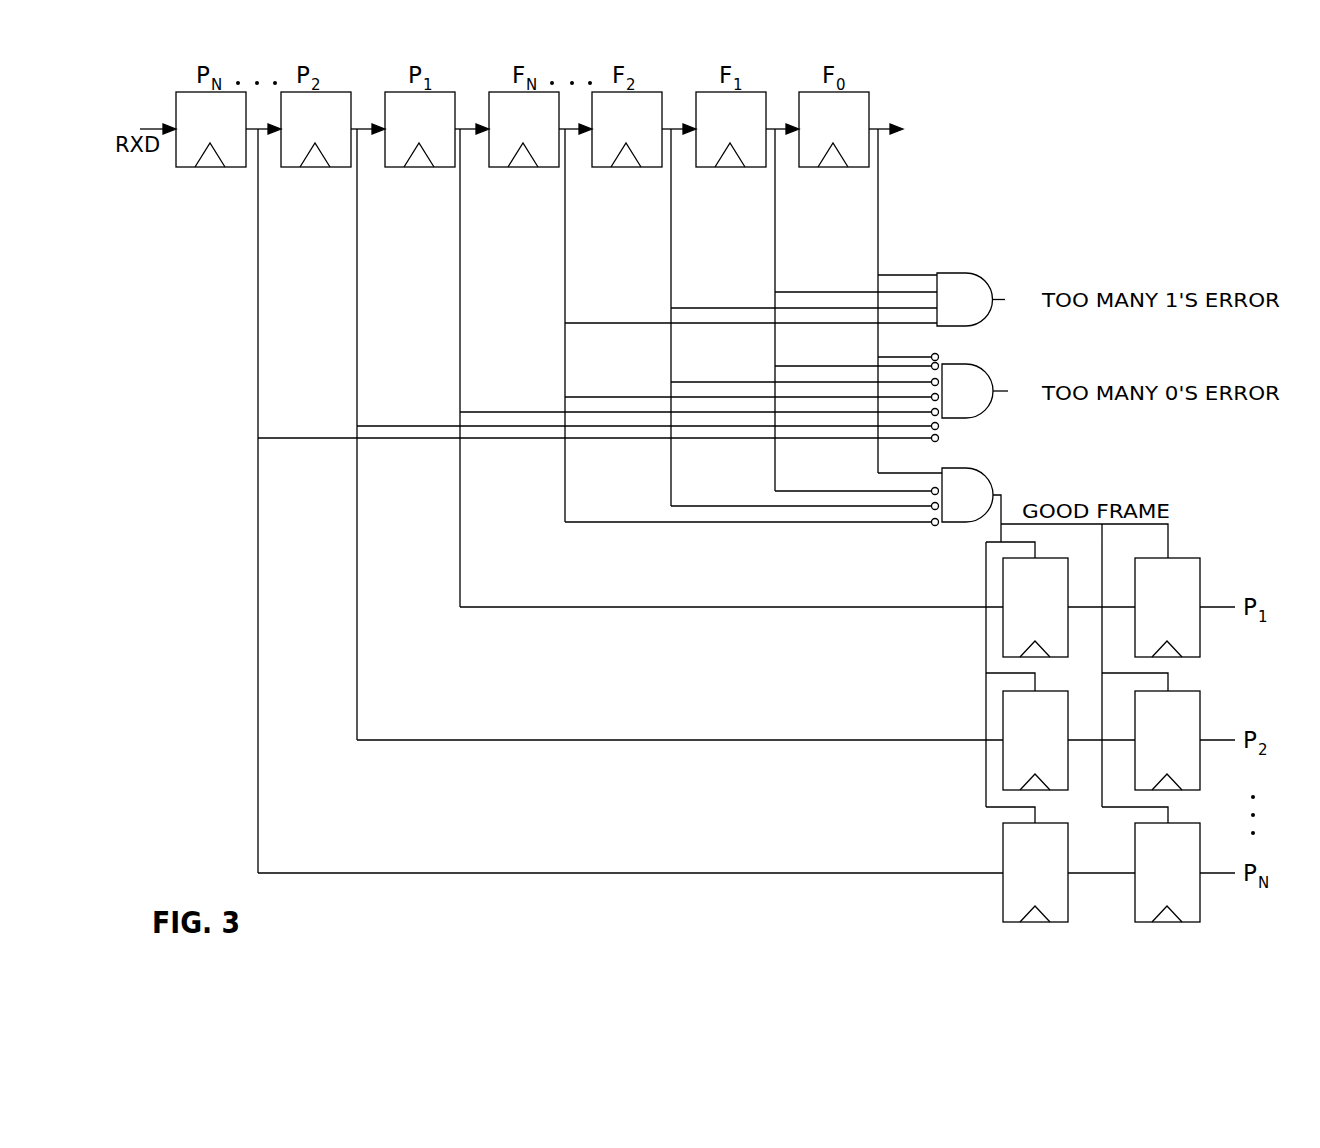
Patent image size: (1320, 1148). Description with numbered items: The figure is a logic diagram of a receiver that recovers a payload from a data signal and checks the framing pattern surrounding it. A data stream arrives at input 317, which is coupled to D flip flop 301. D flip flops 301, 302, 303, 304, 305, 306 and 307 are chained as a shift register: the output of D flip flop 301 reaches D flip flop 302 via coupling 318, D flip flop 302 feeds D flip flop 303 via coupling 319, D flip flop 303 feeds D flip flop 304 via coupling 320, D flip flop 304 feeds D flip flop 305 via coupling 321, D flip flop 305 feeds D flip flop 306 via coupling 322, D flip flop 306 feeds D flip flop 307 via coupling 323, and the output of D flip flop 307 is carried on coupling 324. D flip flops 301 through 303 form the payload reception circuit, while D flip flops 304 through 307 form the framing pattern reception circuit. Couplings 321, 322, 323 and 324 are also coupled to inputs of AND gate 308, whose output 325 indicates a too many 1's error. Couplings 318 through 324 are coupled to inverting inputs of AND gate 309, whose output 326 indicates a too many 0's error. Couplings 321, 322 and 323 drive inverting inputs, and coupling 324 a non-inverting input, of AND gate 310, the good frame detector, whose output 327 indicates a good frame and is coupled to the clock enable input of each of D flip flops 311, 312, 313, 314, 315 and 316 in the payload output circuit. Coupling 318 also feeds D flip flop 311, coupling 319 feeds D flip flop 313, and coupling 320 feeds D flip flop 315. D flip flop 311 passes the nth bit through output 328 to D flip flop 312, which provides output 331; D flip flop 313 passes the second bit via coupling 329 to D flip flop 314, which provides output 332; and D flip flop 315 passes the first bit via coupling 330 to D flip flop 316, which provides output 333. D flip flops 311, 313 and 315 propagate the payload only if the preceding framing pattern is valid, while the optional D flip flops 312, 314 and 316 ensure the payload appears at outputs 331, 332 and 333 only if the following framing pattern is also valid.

The D flip flop 301 is at (186, 167).
The D flip flop 302 is at (291, 167).
The D flip flop 303 is at (395, 167).
The D flip flop 304 is at (499, 167).
The D flip flop 305 is at (602, 167).
The D flip flop 306 is at (706, 167).
The D flip flop 307 is at (809, 167).
The AND gate 308 is at (953, 273).
The AND gate 309 is at (994, 356).
The AND gate 310 is at (994, 461).
The D flip flop 311 is at (1003, 897).
The D flip flop 312 is at (1135, 897).
The D flip flop 313 is at (1003, 770).
The D flip flop 314 is at (1126, 774).
The D flip flop 315 is at (1003, 636).
The D flip flop 316 is at (1185, 558).
The input 317 is at (141, 129).
The coupling 318 is at (258, 282).
The coupling 319 is at (357, 375).
The coupling 320 is at (460, 341).
The coupling 321 is at (565, 303).
The coupling 322 is at (671, 265).
The coupling 323 is at (775, 260).
The coupling 324 is at (878, 242).
The output 325 is at (1005, 300).
The output 326 is at (1008, 392).
The output 327 is at (1005, 497).
The output 328 is at (1100, 872).
The coupling 329 is at (1090, 737).
The coupling 330 is at (1090, 604).
The output 331 is at (1216, 875).
The output 332 is at (1213, 740).
The output 333 is at (1213, 612).